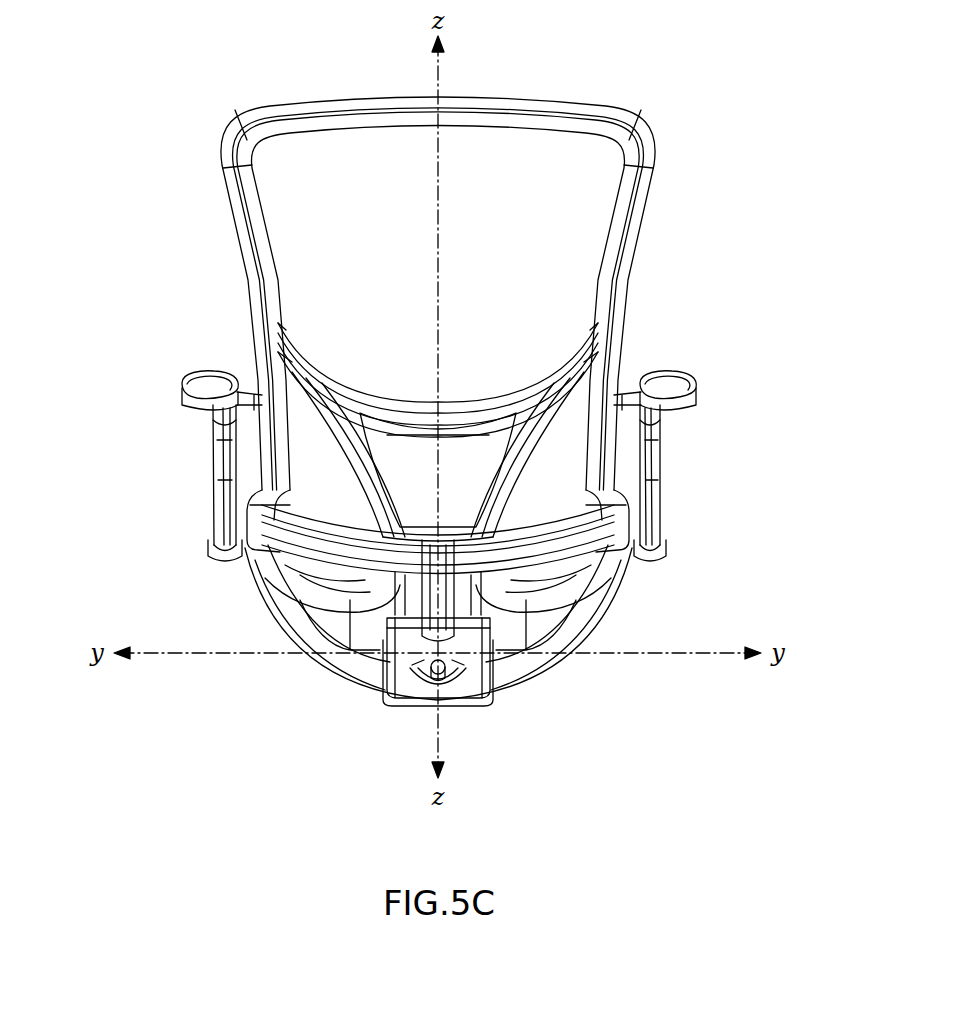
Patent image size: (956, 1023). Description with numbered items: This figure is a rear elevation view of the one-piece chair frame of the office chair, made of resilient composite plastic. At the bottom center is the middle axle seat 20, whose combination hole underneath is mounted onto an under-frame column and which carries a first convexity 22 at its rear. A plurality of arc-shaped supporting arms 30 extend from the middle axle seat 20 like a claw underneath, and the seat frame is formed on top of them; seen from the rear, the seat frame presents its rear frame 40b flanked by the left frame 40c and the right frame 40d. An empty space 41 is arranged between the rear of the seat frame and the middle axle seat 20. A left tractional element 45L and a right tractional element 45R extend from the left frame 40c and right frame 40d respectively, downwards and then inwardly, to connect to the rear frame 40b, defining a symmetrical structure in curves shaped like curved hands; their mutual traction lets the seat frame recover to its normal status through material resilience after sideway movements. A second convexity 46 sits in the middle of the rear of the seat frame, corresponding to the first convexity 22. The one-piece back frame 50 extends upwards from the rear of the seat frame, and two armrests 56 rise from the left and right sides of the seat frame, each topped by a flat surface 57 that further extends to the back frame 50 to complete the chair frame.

The back frame 50 is at (508, 103).
The flat surface 57 is at (662, 377).
The armrest 56 is at (655, 472).
The rear frame 40b is at (430, 562).
The left frame 40c is at (258, 540).
The right frame 40d is at (620, 512).
The left tractional element 45L is at (323, 595).
The right tractional element 45R is at (565, 603).
The supporting arm 30 is at (340, 665).
The empty space 41 is at (540, 627).
The second convexity 46 is at (440, 637).
The middle axle seat 20 is at (427, 643).
The first convexity 22 is at (460, 688).